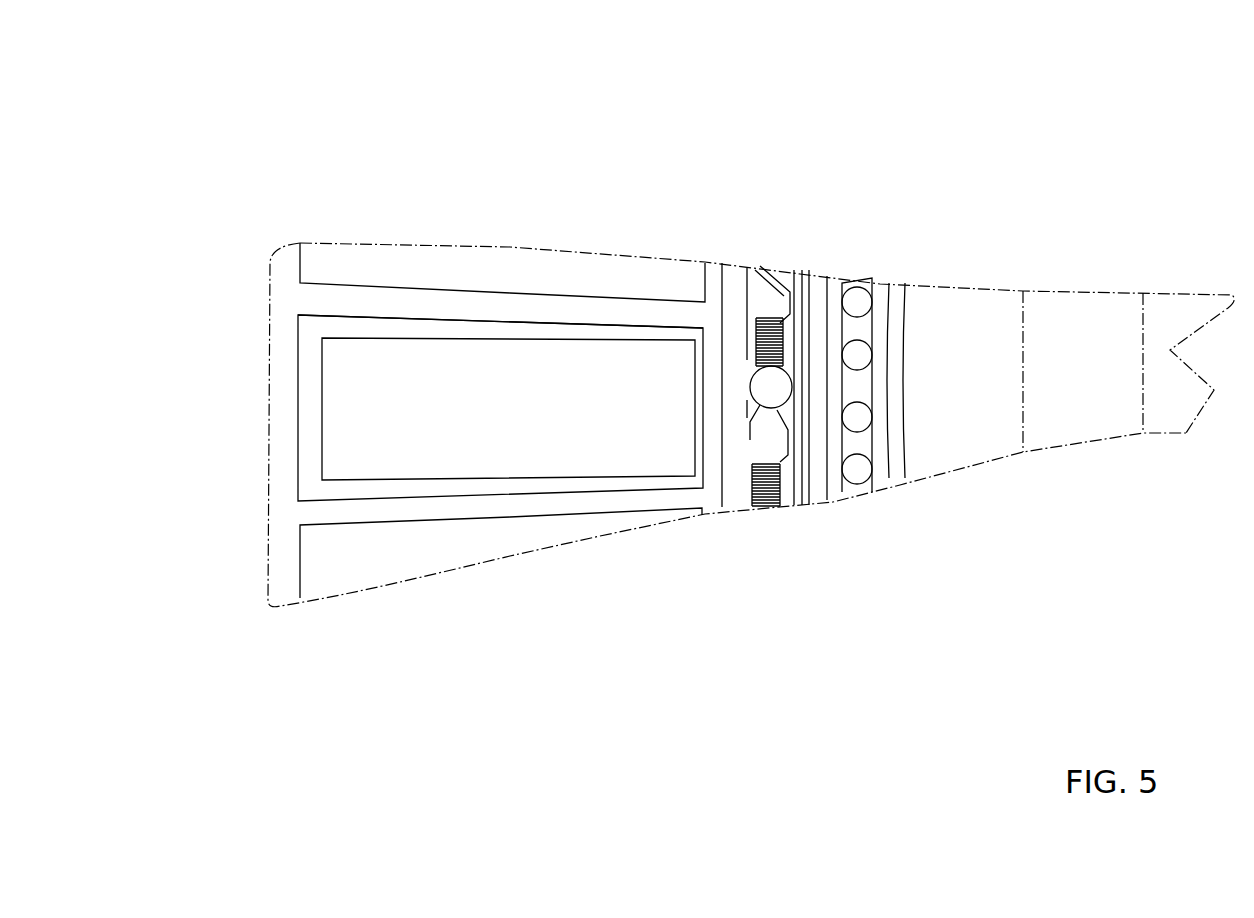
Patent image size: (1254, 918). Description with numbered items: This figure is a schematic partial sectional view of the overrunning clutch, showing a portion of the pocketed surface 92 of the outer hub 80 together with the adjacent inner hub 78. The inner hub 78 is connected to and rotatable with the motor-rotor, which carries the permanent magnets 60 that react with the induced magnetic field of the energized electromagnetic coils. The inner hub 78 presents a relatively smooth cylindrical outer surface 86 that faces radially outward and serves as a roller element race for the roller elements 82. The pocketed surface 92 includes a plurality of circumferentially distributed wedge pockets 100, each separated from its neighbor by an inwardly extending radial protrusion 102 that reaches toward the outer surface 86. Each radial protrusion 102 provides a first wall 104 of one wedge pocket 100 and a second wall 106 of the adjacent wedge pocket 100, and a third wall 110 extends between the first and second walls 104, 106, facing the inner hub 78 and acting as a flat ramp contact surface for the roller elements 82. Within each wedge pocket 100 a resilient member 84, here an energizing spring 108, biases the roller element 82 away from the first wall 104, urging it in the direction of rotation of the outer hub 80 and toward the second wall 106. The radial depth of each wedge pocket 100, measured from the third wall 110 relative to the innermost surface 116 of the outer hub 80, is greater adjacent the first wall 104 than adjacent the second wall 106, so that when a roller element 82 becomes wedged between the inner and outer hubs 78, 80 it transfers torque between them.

The permanent magnets 60 is at (512, 360).
The third wall 110 is at (750, 363).
The outer hub 80 is at (725, 394).
The wedge pockets 100 is at (752, 358).
The energizing spring 108 is at (757, 318).
The pocketed surface 92 is at (788, 294).
The resilient members 84 is at (792, 328).
The cylindrical outer surface 86 is at (797, 360).
The innermost surface 116 is at (810, 418).
The inner hub 78 is at (845, 460).
The radial protrusions 102 is at (787, 455).
The first wall 104 is at (763, 457).
The second wall 106 is at (759, 432).
The roller elements 82 is at (762, 402).